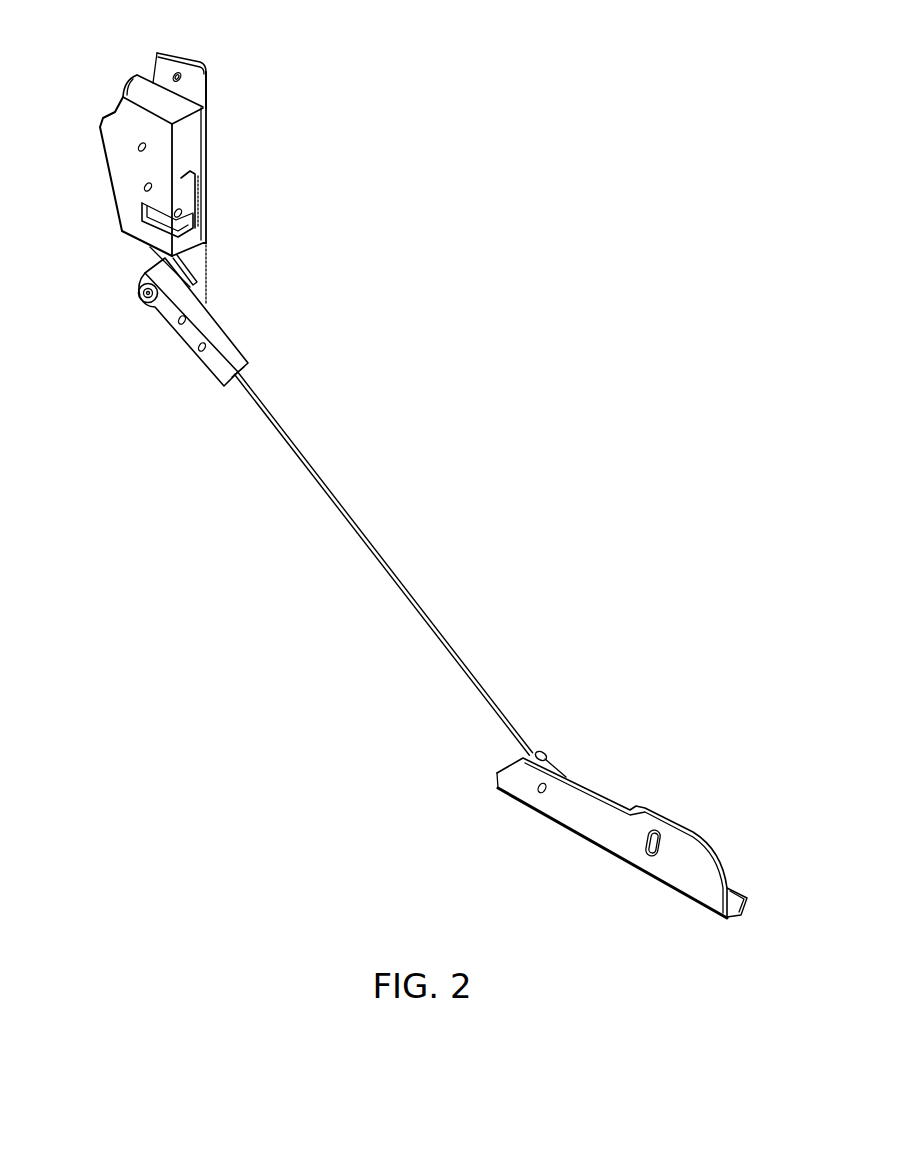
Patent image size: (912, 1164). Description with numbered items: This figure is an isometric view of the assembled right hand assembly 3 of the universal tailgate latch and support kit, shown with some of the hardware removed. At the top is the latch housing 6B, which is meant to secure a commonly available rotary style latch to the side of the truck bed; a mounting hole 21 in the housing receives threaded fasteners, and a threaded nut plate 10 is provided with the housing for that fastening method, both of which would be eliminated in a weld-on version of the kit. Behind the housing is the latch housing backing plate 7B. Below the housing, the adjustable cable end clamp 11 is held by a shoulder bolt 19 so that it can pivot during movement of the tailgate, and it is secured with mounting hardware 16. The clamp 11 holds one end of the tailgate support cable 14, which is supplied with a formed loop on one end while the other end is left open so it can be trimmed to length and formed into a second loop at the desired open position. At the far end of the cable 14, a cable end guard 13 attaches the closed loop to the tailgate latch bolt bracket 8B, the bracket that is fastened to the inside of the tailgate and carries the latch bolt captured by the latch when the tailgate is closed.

The right hand assembly 3 is at (518, 353).
The latch housing 6B is at (99, 120).
The latch housing backing plate 7B is at (205, 166).
The tailgate latch bolt bracket 8B is at (738, 888).
The threaded nut plate 10 is at (193, 55).
The adjustable cable end clamp 11 is at (229, 330).
The cable end guard 13 is at (551, 757).
The tailgate support cable 14 is at (364, 532).
The mounting hardware 16 is at (178, 327).
The shoulder bolt 19 is at (143, 302).
The mounting hole 21 is at (160, 74).